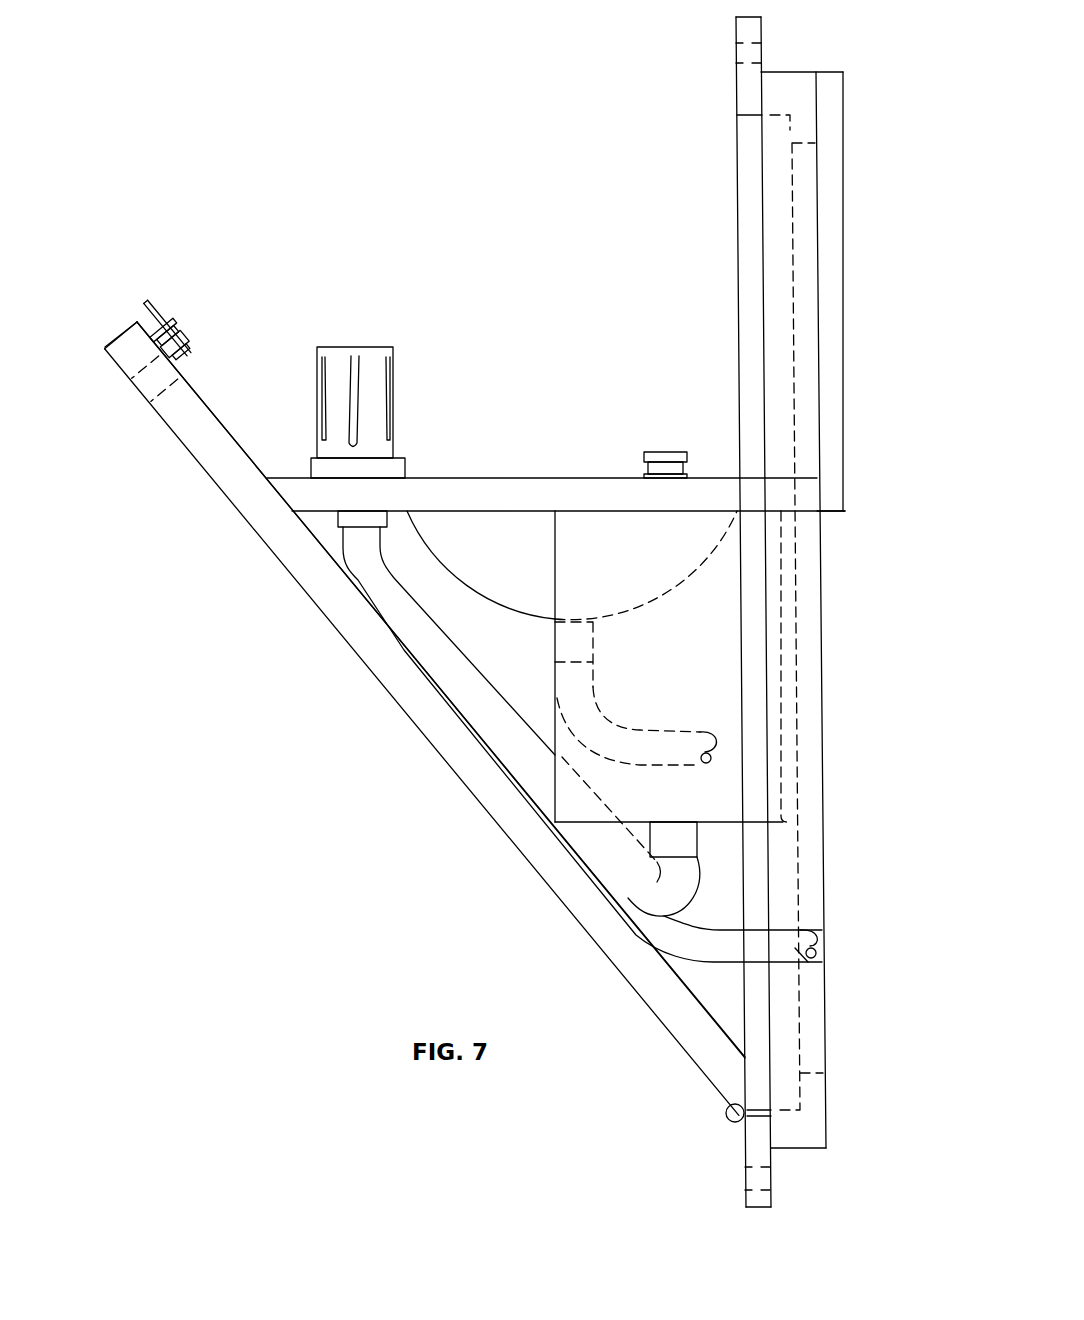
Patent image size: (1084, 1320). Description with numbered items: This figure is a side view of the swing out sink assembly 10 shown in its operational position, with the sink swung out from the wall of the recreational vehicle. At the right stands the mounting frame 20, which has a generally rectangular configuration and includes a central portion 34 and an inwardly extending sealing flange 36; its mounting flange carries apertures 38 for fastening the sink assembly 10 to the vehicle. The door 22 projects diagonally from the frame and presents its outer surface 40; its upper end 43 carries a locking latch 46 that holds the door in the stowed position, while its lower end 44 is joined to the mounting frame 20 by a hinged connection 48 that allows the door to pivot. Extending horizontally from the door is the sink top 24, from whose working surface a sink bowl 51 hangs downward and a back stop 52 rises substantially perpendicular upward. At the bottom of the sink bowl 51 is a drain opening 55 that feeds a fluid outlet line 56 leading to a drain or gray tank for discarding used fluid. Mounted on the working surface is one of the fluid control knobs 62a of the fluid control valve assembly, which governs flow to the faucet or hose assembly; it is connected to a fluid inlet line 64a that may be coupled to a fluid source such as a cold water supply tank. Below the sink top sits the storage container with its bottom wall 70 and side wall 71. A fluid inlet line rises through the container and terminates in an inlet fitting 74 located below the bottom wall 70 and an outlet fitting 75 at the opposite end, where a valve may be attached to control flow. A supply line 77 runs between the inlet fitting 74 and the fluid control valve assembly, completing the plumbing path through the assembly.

The sink assembly 10 is at (496, 186).
The mounting frame 20 is at (728, 1174).
The door 22 is at (210, 403).
The sink top 24 is at (493, 440).
The central portion 34 is at (793, 87).
The sealing flange 36 is at (817, 123).
The apertures 38 is at (752, 57).
The outer surface 40 is at (207, 470).
The upper end 43 is at (125, 347).
The lower end 44 is at (223, 417).
The locking latch 46 is at (193, 330).
The hinged connection 48 is at (730, 1120).
The sink bowl 51 is at (483, 603).
The back stop 52 is at (835, 305).
The drain opening 55 is at (608, 620).
The fluid outlet line 56 is at (620, 723).
The fluid control knob 62a is at (375, 347).
The fluid inlet line 64a is at (800, 965).
The bottom wall 70 is at (777, 823).
The side wall 71 is at (820, 702).
The inlet fitting 74 is at (678, 836).
The outlet fitting 75 is at (667, 452).
The supply line 77 is at (678, 880).